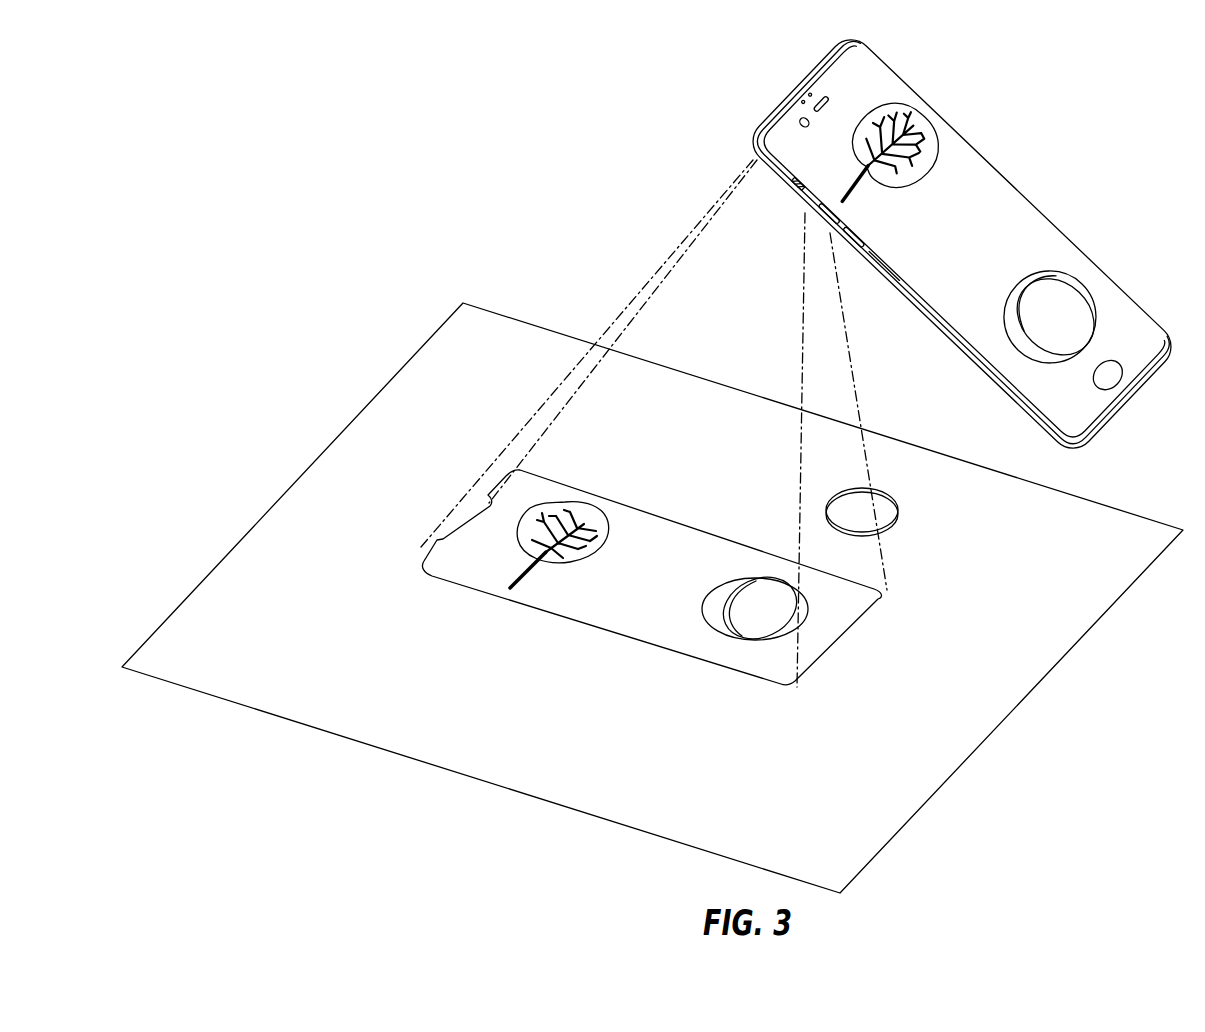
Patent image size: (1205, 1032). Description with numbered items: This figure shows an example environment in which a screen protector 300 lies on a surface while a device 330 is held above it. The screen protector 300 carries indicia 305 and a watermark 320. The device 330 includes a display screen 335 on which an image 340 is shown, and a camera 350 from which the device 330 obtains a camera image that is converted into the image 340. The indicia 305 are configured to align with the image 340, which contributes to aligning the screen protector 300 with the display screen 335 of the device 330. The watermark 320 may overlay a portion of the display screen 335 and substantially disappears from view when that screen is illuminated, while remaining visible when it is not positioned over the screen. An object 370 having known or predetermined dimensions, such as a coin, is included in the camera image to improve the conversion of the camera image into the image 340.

The screen protector 300 is at (447, 490).
The indicia 305 is at (713, 627).
The watermark 320 is at (880, 595).
The device 330 is at (812, 55).
The display screen 335 is at (885, 86).
The image 340 is at (1060, 290).
The camera 350 is at (735, 135).
The object 370 is at (890, 507).